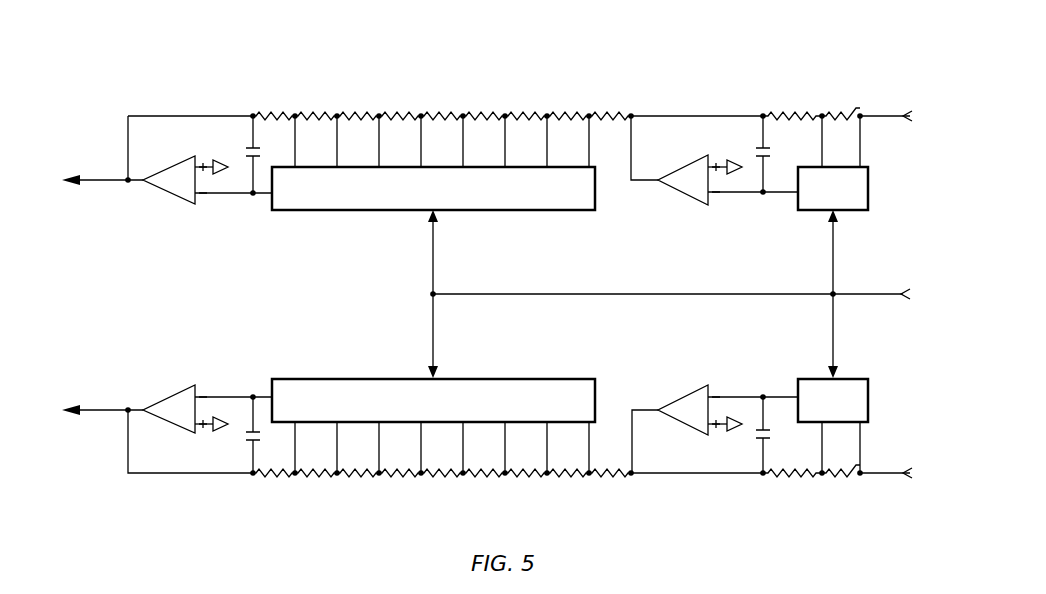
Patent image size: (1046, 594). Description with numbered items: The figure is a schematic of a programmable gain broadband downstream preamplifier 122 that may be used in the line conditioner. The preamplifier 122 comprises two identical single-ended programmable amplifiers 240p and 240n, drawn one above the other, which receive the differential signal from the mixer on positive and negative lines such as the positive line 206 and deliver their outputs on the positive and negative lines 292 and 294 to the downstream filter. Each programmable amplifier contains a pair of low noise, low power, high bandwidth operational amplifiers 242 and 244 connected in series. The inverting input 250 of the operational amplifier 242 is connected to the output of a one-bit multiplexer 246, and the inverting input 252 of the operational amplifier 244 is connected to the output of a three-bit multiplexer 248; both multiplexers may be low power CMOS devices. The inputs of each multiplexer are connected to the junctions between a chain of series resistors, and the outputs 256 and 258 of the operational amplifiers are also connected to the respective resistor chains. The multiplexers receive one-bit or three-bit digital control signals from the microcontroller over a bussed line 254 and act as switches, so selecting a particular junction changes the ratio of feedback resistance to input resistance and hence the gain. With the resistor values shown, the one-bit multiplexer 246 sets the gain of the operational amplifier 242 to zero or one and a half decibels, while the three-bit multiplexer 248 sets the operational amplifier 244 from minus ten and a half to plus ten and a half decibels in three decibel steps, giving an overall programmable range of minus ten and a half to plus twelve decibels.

The programmable gain broadband downstream preamplifier 122 is at (500, 287).
The single-ended programmable amplifier 240p is at (488, 82).
The single-ended programmable amplifier 240n is at (485, 507).
The positive line 292 is at (110, 177).
The negative line 294 is at (110, 408).
The output of operational amplifier 258 is at (135, 177).
The operational amplifier 244 is at (163, 190).
The inverting input 252 is at (260, 196).
The three-bit multiplexer 248 is at (313, 210).
The output of operational amplifier 256 is at (636, 142).
The operational amplifier 242 is at (683, 195).
The inverting input 250 is at (785, 198).
The one-bit multiplexer 246 is at (871, 183).
The positive line 206 is at (888, 114).
The bussed line 254 is at (868, 297).